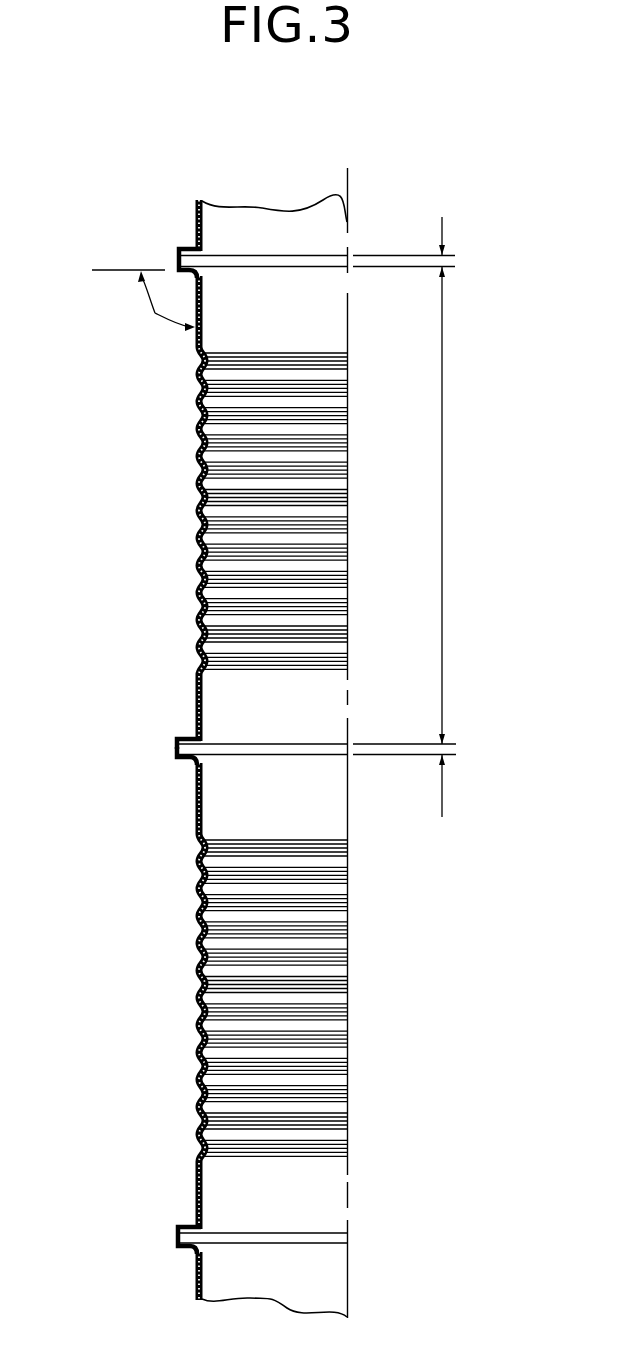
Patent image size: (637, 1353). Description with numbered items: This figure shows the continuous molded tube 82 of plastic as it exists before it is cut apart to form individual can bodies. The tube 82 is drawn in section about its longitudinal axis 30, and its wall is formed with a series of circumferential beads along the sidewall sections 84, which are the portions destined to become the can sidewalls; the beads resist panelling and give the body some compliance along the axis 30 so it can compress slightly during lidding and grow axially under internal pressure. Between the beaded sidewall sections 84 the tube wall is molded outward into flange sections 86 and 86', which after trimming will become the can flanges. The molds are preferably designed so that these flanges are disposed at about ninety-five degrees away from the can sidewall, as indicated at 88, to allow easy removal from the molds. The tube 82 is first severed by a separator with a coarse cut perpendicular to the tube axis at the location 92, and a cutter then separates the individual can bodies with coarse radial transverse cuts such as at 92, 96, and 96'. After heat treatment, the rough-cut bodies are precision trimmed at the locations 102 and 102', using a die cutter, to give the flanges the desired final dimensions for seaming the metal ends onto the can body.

The longitudinal axis 30 is at (349, 222).
The continuous tube 82 is at (193, 335).
The sidewall sections 84 is at (443, 502).
The flange section 86 is at (483, 756).
The flange section 86' is at (361, 238).
The flange angle 88 is at (155, 313).
The rough cut location 92 is at (175, 747).
The rough cut location 96 is at (143, 232).
The rough cut location 96' is at (199, 1244).
The precision trim location 102 is at (138, 706).
The precision trim location 102' is at (133, 787).